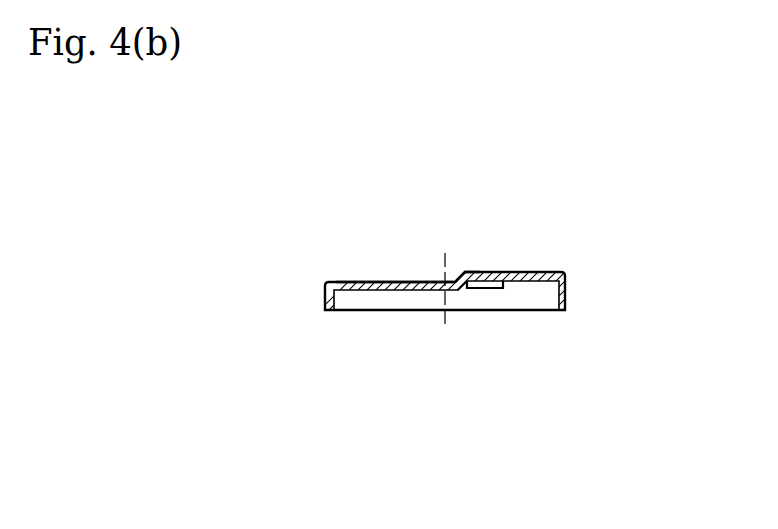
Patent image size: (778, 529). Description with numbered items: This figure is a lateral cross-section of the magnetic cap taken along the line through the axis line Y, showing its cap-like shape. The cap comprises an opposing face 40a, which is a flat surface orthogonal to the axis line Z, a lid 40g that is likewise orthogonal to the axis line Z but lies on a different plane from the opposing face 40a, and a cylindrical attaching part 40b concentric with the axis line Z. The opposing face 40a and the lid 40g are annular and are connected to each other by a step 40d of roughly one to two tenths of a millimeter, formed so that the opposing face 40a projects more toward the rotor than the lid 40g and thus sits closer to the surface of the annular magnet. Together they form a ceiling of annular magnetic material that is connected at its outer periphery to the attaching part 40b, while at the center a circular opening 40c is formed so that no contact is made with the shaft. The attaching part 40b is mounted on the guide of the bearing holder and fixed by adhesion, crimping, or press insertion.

The opposing face 40a is at (502, 270).
The attaching part 40b is at (325, 297).
The circular opening 40c is at (473, 271).
The step 40d is at (490, 288).
The lid 40g is at (382, 282).
The axis line Z is at (445, 315).